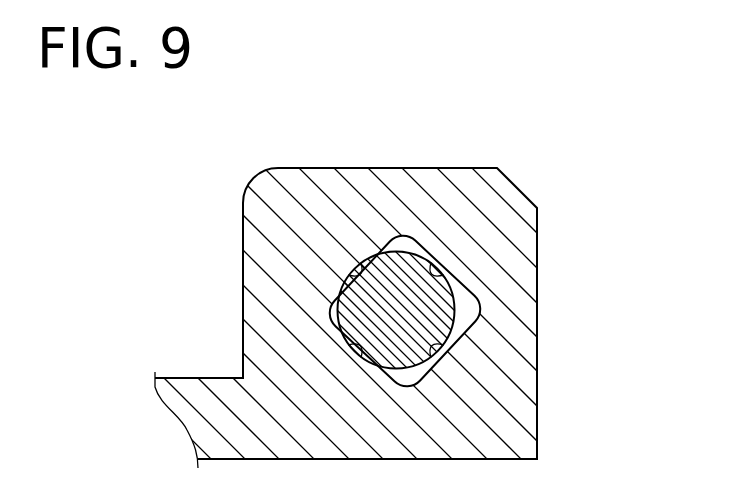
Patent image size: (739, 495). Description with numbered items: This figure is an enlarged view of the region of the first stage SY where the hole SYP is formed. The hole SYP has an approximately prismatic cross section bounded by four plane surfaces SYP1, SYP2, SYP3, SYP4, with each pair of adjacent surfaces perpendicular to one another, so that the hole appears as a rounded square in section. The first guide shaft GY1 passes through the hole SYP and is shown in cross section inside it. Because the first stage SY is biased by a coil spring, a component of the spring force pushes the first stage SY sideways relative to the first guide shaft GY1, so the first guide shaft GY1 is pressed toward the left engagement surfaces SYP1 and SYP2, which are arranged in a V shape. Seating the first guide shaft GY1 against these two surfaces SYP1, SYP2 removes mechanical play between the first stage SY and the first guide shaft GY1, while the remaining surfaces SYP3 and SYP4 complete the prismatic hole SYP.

The first stage SY is at (537, 432).
The hole SYP is at (398, 243).
The first guide shaft GY1 is at (488, 322).
The plane surface SYP1 is at (352, 277).
The plane surface SYP2 is at (350, 347).
The plane surface SYP3 is at (442, 283).
The plane surface SYP4 is at (447, 341).